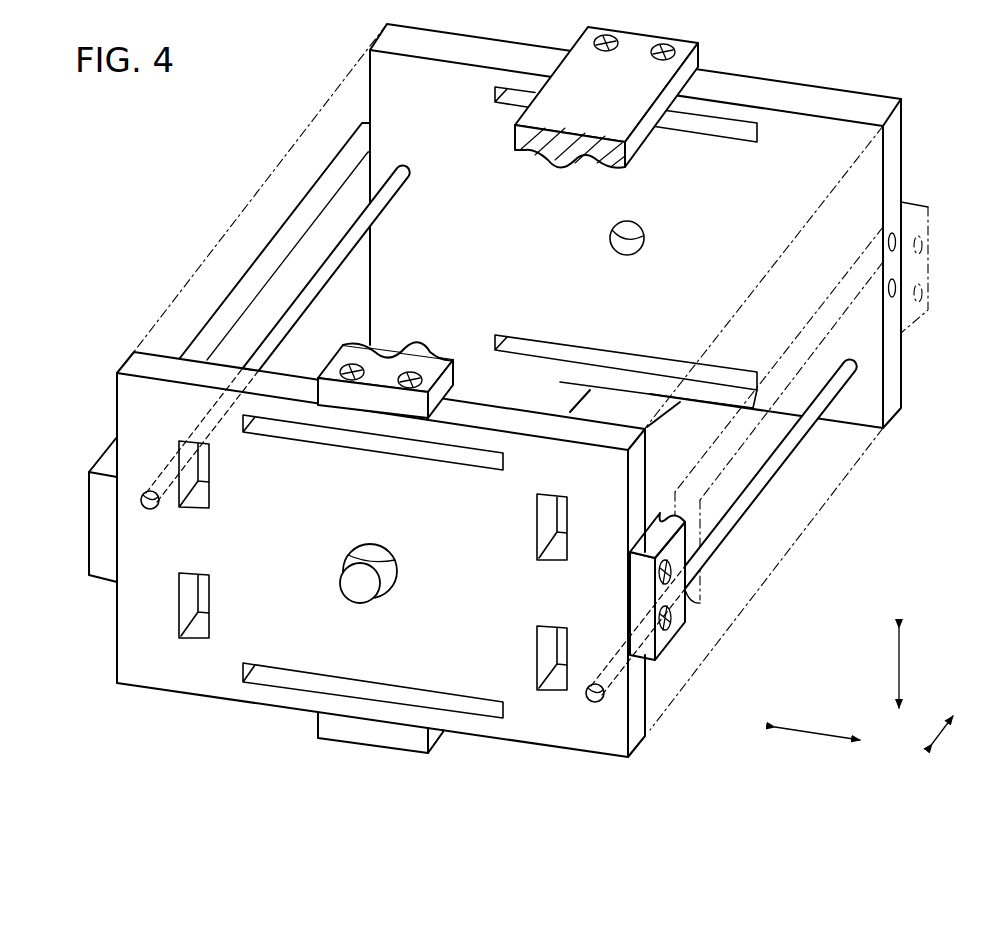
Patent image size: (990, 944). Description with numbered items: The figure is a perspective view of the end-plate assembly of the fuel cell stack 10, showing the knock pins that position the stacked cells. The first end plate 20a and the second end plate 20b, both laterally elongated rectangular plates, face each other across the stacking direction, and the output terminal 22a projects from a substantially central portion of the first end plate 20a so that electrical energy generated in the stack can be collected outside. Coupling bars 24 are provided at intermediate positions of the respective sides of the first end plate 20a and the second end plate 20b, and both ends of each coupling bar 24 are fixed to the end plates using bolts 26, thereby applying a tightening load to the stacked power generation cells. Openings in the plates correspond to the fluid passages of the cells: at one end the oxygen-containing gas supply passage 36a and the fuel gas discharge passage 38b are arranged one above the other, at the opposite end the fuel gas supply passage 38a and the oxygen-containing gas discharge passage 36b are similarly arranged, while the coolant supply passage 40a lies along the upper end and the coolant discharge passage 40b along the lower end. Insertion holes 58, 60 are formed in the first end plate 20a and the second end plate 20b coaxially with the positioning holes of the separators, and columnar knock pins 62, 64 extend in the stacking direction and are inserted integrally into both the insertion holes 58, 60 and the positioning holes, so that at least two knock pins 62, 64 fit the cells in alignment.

The fuel cell stack 10 is at (116, 123).
The first end plate 20a is at (128, 361).
The second end plate 20b is at (366, 47).
The output terminal 22a is at (360, 598).
The coupling bar 24 is at (637, 47).
The bolt 26 is at (414, 376).
The oxygen-containing gas supply passage 36a is at (203, 493).
The oxygen-containing gas discharge passage 36b is at (545, 648).
The fuel gas supply passage 38a is at (538, 516).
The fuel gas discharge passage 38b is at (203, 629).
The coolant supply passage 40a is at (316, 432).
The coolant discharge passage 40b is at (306, 680).
The insertion hole 58 is at (593, 703).
The insertion hole 60 is at (406, 180).
The knock pin 62 is at (797, 442).
The knock pin 64 is at (358, 213).